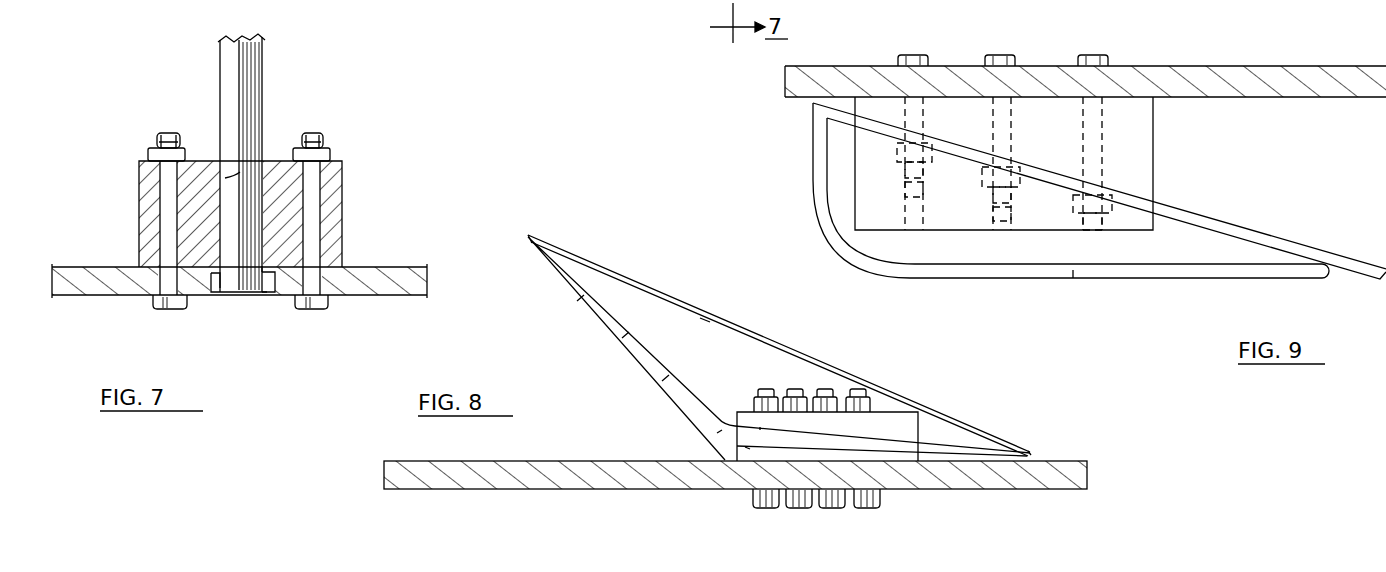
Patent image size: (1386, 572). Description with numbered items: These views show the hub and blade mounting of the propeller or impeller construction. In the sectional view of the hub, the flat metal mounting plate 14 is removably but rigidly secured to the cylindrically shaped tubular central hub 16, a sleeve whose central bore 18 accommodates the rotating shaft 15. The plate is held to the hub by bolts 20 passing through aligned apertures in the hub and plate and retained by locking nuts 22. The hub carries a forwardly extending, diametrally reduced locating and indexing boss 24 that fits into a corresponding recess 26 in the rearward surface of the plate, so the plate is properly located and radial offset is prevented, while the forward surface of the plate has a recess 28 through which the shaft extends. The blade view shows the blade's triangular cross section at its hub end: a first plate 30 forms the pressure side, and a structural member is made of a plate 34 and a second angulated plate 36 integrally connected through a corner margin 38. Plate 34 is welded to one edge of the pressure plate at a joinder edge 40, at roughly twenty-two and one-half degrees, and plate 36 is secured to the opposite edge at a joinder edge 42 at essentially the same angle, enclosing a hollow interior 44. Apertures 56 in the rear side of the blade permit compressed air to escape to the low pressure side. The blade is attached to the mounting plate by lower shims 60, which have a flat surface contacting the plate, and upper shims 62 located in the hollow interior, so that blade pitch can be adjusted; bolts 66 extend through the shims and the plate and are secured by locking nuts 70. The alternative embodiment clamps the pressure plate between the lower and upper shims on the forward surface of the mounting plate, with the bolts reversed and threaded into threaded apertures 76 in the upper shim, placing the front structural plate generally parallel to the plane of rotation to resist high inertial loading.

In FIG. 7, the mounting plate 14 is at (70, 267).
In FIG. 8, the mounting plate 14 is at (1070, 462).
In FIG. 9, the mounting plate 14 is at (1330, 75).
In FIG. 7, the tubular post 15 is at (228, 82).
In FIG. 7, the central hub 16 is at (342, 192).
In FIG. 7, the central bore 18 is at (225, 178).
In FIG. 7, the bolts 20 is at (167, 304).
In FIG. 7, the locking nuts 22 is at (152, 142).
In FIG. 7, the locating and indexing boss 24 is at (210, 292).
In FIG. 7, the recess 26 is at (262, 266).
In FIG. 7, the recess 28 is at (266, 295).
In FIG. 8, the first plate 30 is at (626, 276).
In FIG. 9, the first plate 30 is at (1205, 218).
In FIG. 8, the plate 34 is at (760, 427).
In FIG. 9, the plate 34 is at (1073, 270).
In FIG. 8, the second angulated plate 36 is at (638, 360).
In FIG. 9, the second angulated plate 36 is at (823, 200).
In FIG. 8, the corner margin 38 is at (717, 433).
In FIG. 8, the joinder edge 40 is at (1030, 450).
In FIG. 8, the joinder edge 42 is at (529, 233).
In FIG. 8, the hollow interior 44 is at (705, 322).
In FIG. 8, the apertures 56 is at (578, 298).
In FIG. 8, the lower shims 60 is at (745, 447).
In FIG. 9, the lower shims 60 is at (1135, 133).
In FIG. 8, the upper shims 62 is at (905, 412).
In FIG. 9, the upper shims 62 is at (1132, 225).
In FIG. 8, the bolts 66 is at (782, 501).
In FIG. 9, the bolts 66 is at (1000, 55).
In FIG. 8, the locking nuts 70 is at (800, 390).
In FIG. 9, the threaded apertures 76 is at (905, 180).